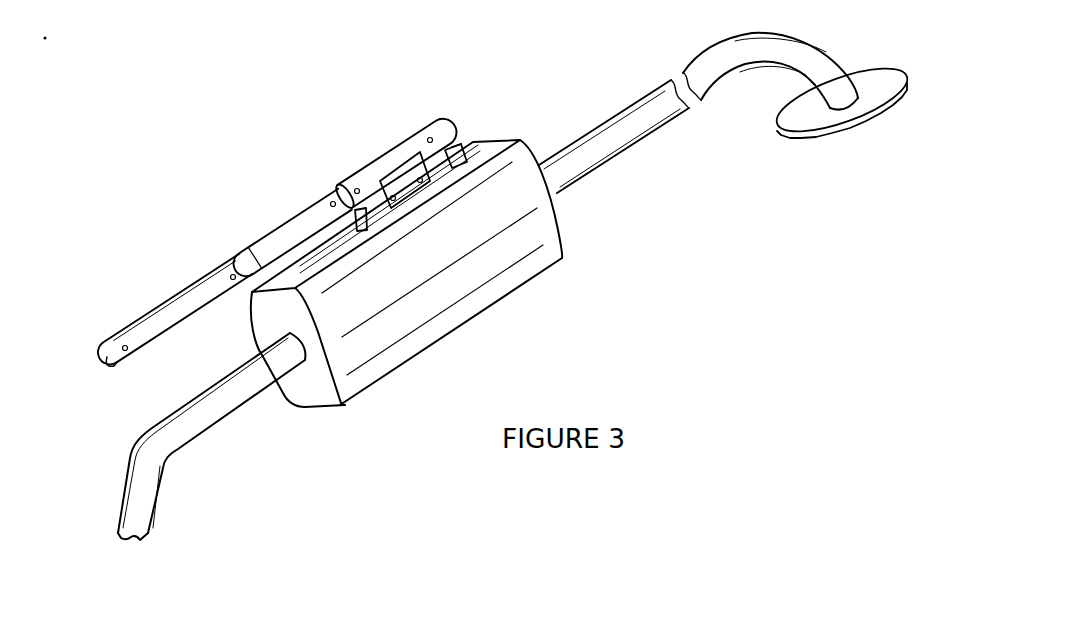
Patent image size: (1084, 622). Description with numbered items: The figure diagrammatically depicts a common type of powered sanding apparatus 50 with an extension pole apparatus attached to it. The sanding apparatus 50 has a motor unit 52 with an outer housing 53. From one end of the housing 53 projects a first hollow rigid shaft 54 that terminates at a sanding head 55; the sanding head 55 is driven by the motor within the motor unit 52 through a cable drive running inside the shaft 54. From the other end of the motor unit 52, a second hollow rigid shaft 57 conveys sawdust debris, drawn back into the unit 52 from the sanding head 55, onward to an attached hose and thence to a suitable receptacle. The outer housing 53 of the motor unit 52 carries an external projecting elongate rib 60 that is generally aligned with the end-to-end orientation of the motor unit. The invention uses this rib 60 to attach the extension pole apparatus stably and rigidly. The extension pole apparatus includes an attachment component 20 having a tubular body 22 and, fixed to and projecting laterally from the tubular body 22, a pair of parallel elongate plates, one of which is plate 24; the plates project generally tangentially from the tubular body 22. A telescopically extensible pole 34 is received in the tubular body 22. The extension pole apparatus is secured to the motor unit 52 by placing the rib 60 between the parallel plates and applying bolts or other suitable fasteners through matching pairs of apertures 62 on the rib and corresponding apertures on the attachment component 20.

The attachment component 20 is at (388, 118).
The tubular body 22 is at (446, 149).
The plate 24 is at (419, 176).
The telescoping handle rod 34 is at (270, 240).
The powered sanding apparatus 50 is at (565, 80).
The motor unit 52 is at (560, 220).
The outer housing 53 is at (502, 295).
The first hollow rigid shaft 54 is at (635, 142).
The sanding head 55 is at (850, 147).
The second hollow rigid shaft 57 is at (227, 397).
The external projecting elongate rib 60 is at (462, 150).
The apertures 62 is at (393, 200).